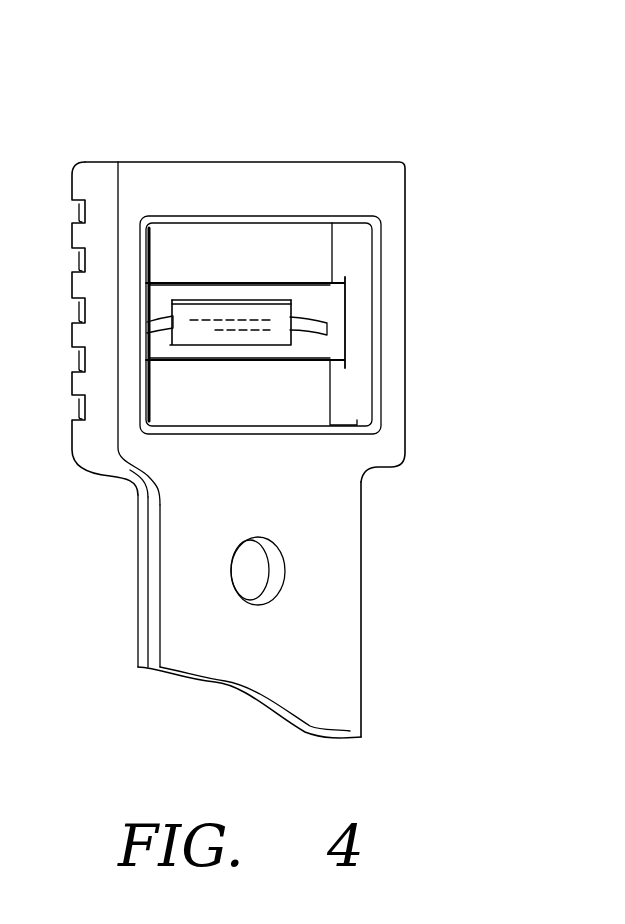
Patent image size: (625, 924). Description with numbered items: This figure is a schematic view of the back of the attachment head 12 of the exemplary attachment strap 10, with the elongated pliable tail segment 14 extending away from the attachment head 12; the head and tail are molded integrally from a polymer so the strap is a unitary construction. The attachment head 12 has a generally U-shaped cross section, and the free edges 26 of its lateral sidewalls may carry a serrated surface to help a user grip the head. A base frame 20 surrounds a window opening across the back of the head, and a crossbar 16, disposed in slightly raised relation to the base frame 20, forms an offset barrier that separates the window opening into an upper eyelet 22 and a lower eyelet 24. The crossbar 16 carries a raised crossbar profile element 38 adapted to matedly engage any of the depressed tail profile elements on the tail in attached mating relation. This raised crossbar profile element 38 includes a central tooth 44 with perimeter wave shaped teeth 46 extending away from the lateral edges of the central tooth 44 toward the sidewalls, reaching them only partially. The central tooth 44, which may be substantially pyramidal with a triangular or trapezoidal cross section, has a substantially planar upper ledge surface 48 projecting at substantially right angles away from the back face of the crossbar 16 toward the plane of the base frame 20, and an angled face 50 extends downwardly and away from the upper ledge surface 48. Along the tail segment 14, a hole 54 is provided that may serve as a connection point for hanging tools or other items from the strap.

The attachment strap 10 is at (296, 112).
The attachment head 12 is at (410, 188).
The tail segment 14 is at (366, 656).
The crossbar 16 is at (305, 356).
The base frame 20 is at (236, 203).
The upper eyelet 22 is at (241, 267).
The lower eyelet 24 is at (244, 411).
The free edges of the lateral sidewalls 26 is at (72, 240).
The raised crossbar profile element 38 is at (270, 290).
The central tooth 44 is at (193, 343).
The perimeter wave shaped teeth 46 is at (165, 322).
The upper ledge surface 48 is at (195, 303).
The angled face 50 is at (263, 325).
The holes 54 is at (273, 578).